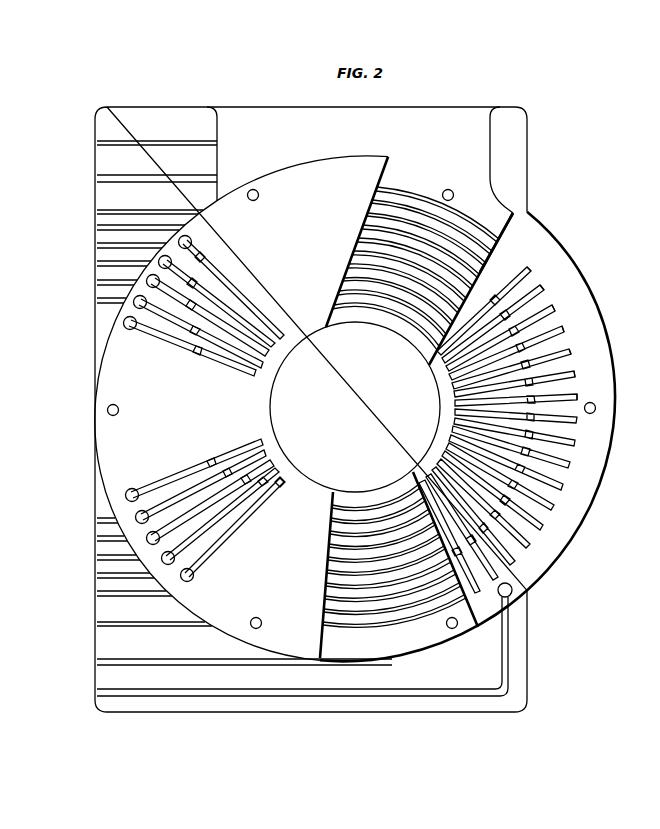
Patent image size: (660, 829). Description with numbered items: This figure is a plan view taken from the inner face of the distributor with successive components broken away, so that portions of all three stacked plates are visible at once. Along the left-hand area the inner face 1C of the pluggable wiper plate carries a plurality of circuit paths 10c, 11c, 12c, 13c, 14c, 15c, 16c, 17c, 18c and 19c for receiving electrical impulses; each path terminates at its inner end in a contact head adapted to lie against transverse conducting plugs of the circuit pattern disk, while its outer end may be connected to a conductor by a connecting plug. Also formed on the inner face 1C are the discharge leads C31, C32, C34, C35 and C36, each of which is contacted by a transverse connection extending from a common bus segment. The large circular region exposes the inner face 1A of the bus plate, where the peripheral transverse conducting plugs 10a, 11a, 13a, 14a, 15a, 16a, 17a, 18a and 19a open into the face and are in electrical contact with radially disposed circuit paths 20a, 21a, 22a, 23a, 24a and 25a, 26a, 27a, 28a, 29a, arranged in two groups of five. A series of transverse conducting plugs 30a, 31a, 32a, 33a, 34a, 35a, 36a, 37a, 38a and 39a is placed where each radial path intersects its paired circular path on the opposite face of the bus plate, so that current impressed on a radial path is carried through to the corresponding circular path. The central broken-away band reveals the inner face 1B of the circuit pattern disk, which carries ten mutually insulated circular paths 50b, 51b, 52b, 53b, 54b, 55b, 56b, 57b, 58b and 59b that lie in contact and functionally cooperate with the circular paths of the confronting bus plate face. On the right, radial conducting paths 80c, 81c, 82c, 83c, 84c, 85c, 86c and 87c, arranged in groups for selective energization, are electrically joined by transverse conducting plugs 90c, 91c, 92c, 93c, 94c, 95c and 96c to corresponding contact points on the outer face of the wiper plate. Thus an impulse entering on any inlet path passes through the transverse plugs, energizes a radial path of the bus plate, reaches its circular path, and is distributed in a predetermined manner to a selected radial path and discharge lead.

The inner face of the bus plate 1A is at (280, 178).
The inner face of the circuit pattern disk 1B is at (463, 128).
The inner face of the pluggable wiper plate 1C is at (513, 127).
The discharge lead C31 is at (182, 137).
The discharge lead C32 is at (137, 178).
The discharge lead C34 is at (127, 628).
The discharge lead C35 is at (172, 664).
The discharge lead C36 is at (215, 694).
The peripheral transverse conducting plug 10a is at (188, 238).
The peripheral transverse conducting plug 11a is at (165, 256).
The peripheral transverse conducting plug 13a is at (134, 306).
The peripheral transverse conducting plug 14a is at (130, 330).
The peripheral transverse conducting plug 15a is at (127, 492).
The peripheral transverse conducting plug 16a is at (130, 508).
The peripheral transverse conducting plug 17a is at (114, 539).
The peripheral transverse conducting plug 18a is at (168, 565).
The peripheral transverse conducting plug 19a is at (193, 580).
The radially disposed circuit path 20a is at (200, 251).
The radially disposed circuit path 21a is at (174, 269).
The radially disposed circuit path 22a is at (160, 287).
The radially disposed circuit path 23a is at (147, 305).
The radially disposed circuit path 24a is at (160, 338).
The radially disposed circuit path 25a is at (146, 490).
The radially disposed circuit path 26a is at (155, 510).
The radially disposed circuit path 27a is at (162, 530).
The radially disposed circuit path 28a is at (177, 549).
The radially disposed circuit path 29a is at (193, 566).
The transverse conducting plug 30a is at (206, 257).
The transverse conducting plug 31a is at (198, 282).
The transverse conducting plug 32a is at (194, 306).
The transverse conducting plug 33a is at (198, 330).
The transverse conducting plug 34a is at (198, 354).
The transverse conducting plug 35a is at (211, 462).
The transverse conducting plug 36a is at (228, 470).
The transverse conducting plug 37a is at (247, 482).
The transverse conducting plug 38a is at (266, 485).
The transverse conducting plug 39a is at (283, 484).
The circuit path 10c is at (100, 227).
The circuit path 11c is at (100, 246).
The circuit path 12c is at (100, 264).
The circuit path 13c is at (100, 282).
The circuit path 14c is at (100, 300).
The circuit path 15c is at (100, 520).
The circuit path 16c is at (100, 538).
The circuit path 17c is at (100, 557).
The circuit path 18c is at (100, 575).
The circuit path 19c is at (100, 593).
The circular path 50b is at (388, 198).
The circular path 51b is at (407, 208).
The circular path 52b is at (440, 228).
The circular path 53b is at (434, 248).
The circular path 54b is at (450, 262).
The circular path 55b is at (382, 263).
The circular path 56b is at (395, 285).
The circular path 57b is at (413, 298).
The circular path 58b is at (423, 308).
The circular path 59b is at (437, 322).
The radial conducting path 80c is at (580, 399).
The radial conducting path 81c is at (577, 374).
The radial conducting path 82c is at (572, 351).
The radial conducting path 83c is at (565, 329).
The radial conducting path 84c is at (556, 308).
The radial conducting path 85c is at (544, 288).
The radial conducting path 86c is at (531, 269).
The radial conducting path 87c is at (517, 240).
The transverse conducting plug 90c is at (533, 400).
The transverse conducting plug 91c is at (531, 381).
The transverse conducting plug 92c is at (527, 363).
The transverse conducting plug 93c is at (522, 345).
The transverse conducting plug 94c is at (515, 328).
The transverse conducting plug 95c is at (505, 312).
The transverse conducting plug 96c is at (495, 297).